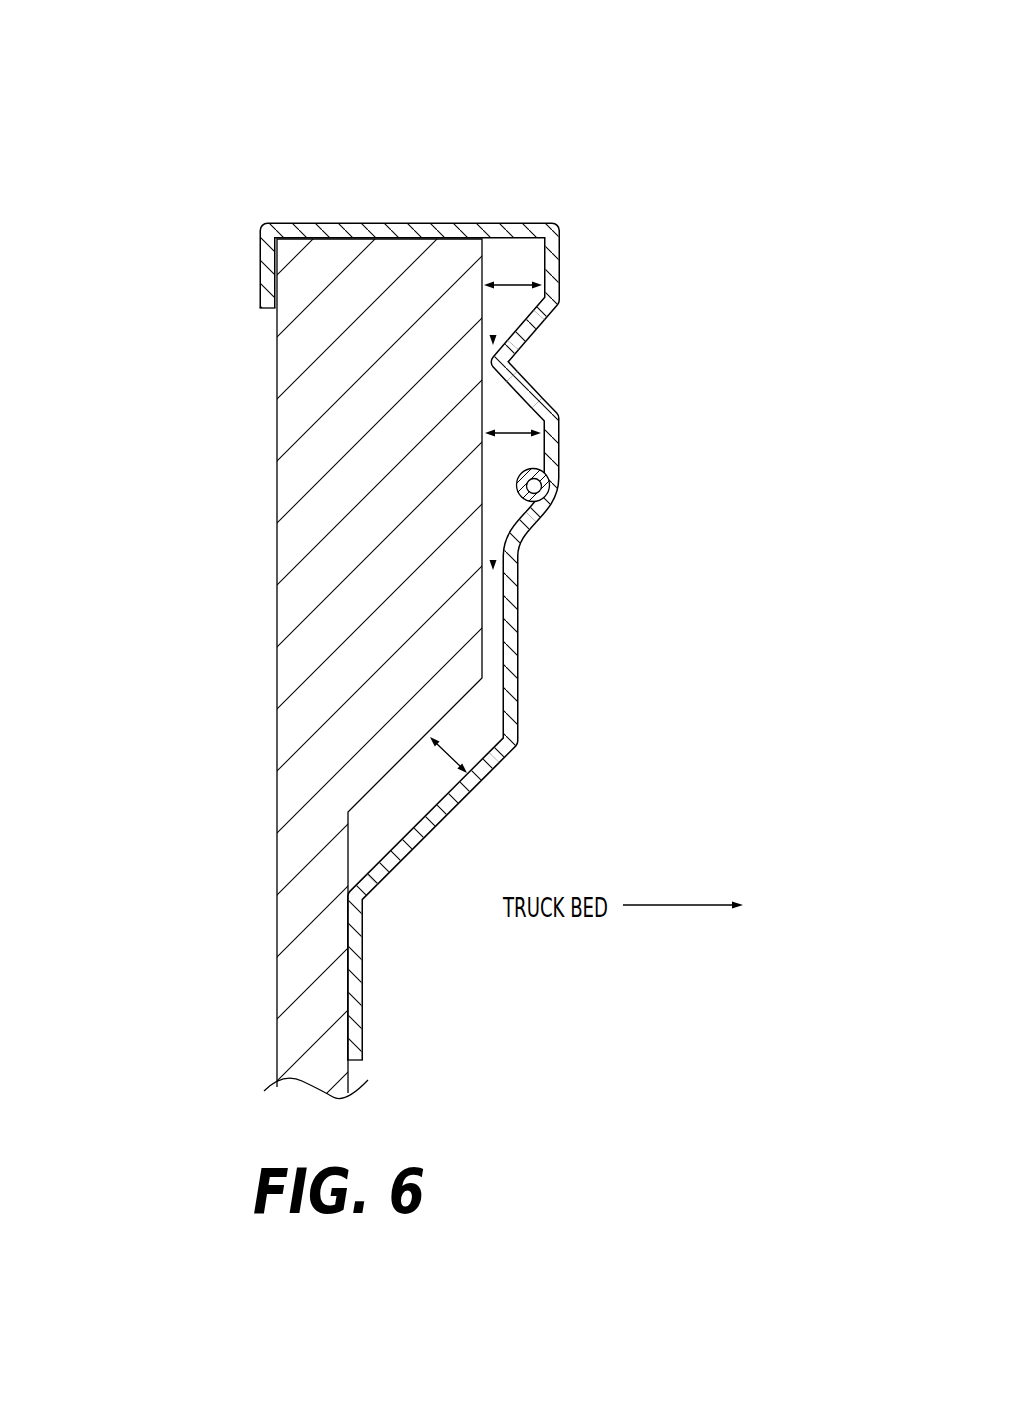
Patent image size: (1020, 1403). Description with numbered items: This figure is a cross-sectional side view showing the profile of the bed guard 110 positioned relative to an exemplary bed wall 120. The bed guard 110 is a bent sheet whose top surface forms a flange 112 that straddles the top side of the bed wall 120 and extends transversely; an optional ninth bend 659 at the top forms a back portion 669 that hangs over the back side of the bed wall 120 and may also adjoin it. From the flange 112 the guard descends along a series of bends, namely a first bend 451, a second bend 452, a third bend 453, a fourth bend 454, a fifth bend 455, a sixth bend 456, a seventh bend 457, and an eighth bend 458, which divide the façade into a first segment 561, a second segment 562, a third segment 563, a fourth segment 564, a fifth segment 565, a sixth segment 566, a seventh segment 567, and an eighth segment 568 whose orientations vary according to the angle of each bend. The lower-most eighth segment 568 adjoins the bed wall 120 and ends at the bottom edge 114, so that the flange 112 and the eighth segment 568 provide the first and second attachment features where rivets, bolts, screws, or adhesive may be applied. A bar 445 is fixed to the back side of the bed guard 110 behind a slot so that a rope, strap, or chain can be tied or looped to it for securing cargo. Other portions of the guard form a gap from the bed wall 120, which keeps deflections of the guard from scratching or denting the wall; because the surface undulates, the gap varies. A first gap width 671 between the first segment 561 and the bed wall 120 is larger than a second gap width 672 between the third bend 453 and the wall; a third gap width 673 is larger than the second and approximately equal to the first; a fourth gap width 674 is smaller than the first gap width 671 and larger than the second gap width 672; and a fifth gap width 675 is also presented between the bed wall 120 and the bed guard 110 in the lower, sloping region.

The bed guard 110 is at (510, 558).
The flange 112 is at (417, 223).
The bottom edge 114 is at (362, 1061).
The bed wall 120 is at (276, 1060).
The bar 445 is at (516, 483).
The first bend 451 is at (555, 222).
The second bend 452 is at (562, 304).
The third bend 453 is at (522, 363).
The fourth bend 454 is at (560, 418).
The fifth bend 455 is at (560, 507).
The sixth bend 456 is at (519, 542).
The seventh bend 457 is at (517, 748).
The eighth bend 458 is at (364, 900).
The first segment 561 is at (561, 250).
The second segment 562 is at (541, 336).
The third segment 563 is at (542, 386).
The fourth segment 564 is at (560, 440).
The fifth segment 565 is at (523, 506).
The sixth segment 566 is at (518, 636).
The seventh segment 567 is at (438, 829).
The eighth segment 568 is at (364, 1012).
The ninth bend 659 is at (267, 223).
The back portion 669 is at (260, 281).
The first gap width 671 is at (513, 283).
The second gap width 672 is at (493, 343).
The third gap width 673 is at (511, 433).
The fourth gap width 674 is at (493, 568).
The fifth gap width 675 is at (447, 752).